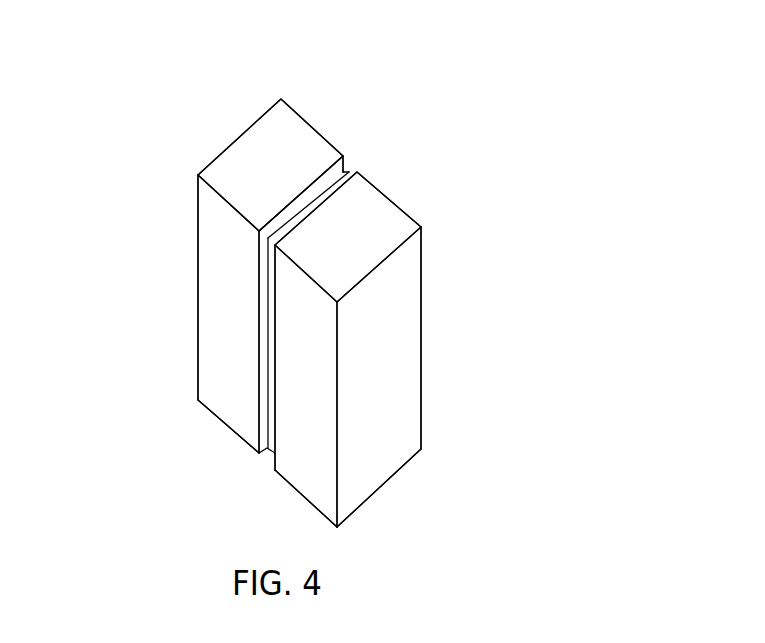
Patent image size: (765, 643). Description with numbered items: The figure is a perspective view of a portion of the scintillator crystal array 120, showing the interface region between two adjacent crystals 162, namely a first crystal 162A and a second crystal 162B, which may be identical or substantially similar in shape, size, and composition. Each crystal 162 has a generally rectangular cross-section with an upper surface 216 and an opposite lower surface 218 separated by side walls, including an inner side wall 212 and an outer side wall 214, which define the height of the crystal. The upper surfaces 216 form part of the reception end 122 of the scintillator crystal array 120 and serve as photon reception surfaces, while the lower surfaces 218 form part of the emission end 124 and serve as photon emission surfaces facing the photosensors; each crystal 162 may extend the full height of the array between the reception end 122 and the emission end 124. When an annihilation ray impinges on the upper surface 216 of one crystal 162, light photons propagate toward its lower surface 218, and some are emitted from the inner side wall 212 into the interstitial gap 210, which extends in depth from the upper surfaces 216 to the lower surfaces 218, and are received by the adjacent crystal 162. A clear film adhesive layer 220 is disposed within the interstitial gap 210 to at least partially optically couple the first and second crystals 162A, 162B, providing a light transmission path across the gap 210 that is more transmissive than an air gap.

The scintillator crystal array 120 is at (497, 37).
The reception end 122 is at (250, 108).
The emission end 124 is at (290, 492).
The crystal 162 is at (248, 128).
The first crystal 162A is at (217, 172).
The second crystal 162B is at (405, 242).
The interstitial gap 210 is at (353, 166).
The inner side wall 212 is at (300, 217).
The outer side wall 214 is at (312, 142).
The upper surface 216 is at (292, 132).
The lower surface 218 is at (229, 428).
The clear film adhesive (CFA) layer 220 is at (272, 322).